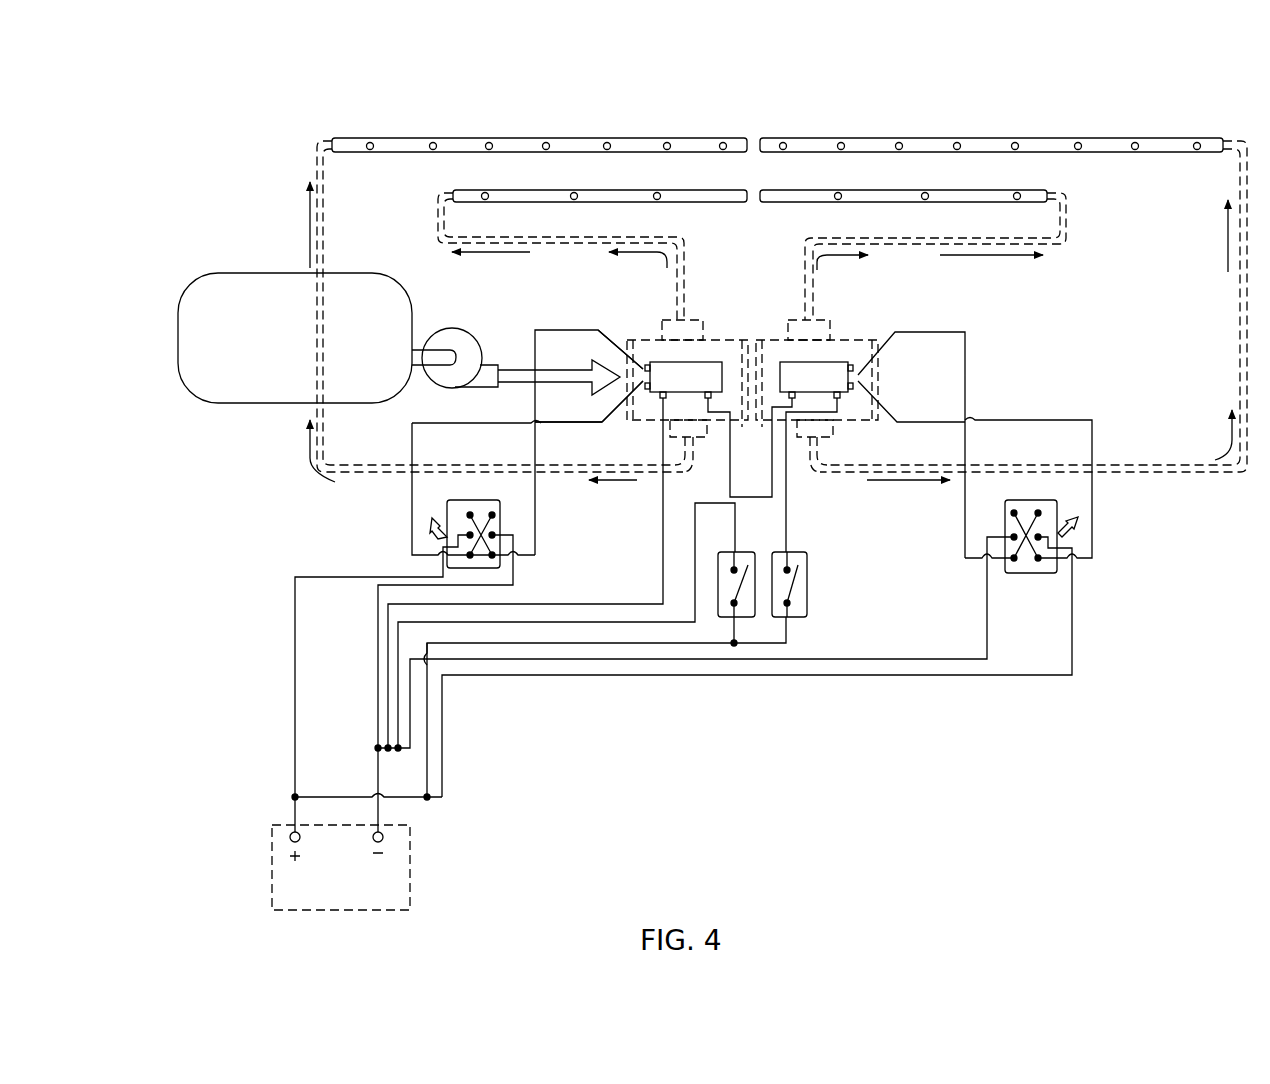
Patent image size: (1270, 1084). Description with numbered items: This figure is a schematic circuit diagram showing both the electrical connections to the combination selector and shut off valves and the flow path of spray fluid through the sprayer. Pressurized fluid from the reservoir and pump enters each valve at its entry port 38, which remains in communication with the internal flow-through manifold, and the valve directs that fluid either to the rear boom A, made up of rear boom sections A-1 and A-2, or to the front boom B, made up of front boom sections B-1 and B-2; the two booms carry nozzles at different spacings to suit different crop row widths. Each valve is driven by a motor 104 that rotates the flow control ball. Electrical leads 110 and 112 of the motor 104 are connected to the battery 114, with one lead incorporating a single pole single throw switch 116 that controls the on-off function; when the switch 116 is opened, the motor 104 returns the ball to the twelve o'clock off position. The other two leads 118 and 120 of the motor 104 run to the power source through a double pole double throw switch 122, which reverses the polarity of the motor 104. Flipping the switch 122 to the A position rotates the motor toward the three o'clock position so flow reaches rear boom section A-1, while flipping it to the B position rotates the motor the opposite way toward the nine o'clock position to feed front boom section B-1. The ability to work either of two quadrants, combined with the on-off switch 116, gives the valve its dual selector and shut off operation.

The rear boom A is at (686, 136).
The rear boom section A-1 is at (447, 147).
The rear boom section A-2 is at (867, 147).
The front boom B is at (633, 187).
The front boom section B-1 is at (515, 193).
The front boom section B-2 is at (918, 193).
The entry port 38 is at (641, 369).
The motor 104 is at (698, 370).
The electrical lead 110 is at (728, 475).
The electrical lead 112 is at (662, 522).
The battery 114 is at (403, 870).
The single pole single throw switch 116 is at (738, 556).
The electrical lead 118 is at (546, 330).
The electrical lead 120 is at (553, 424).
The double pole double throw switch 122 is at (447, 510).